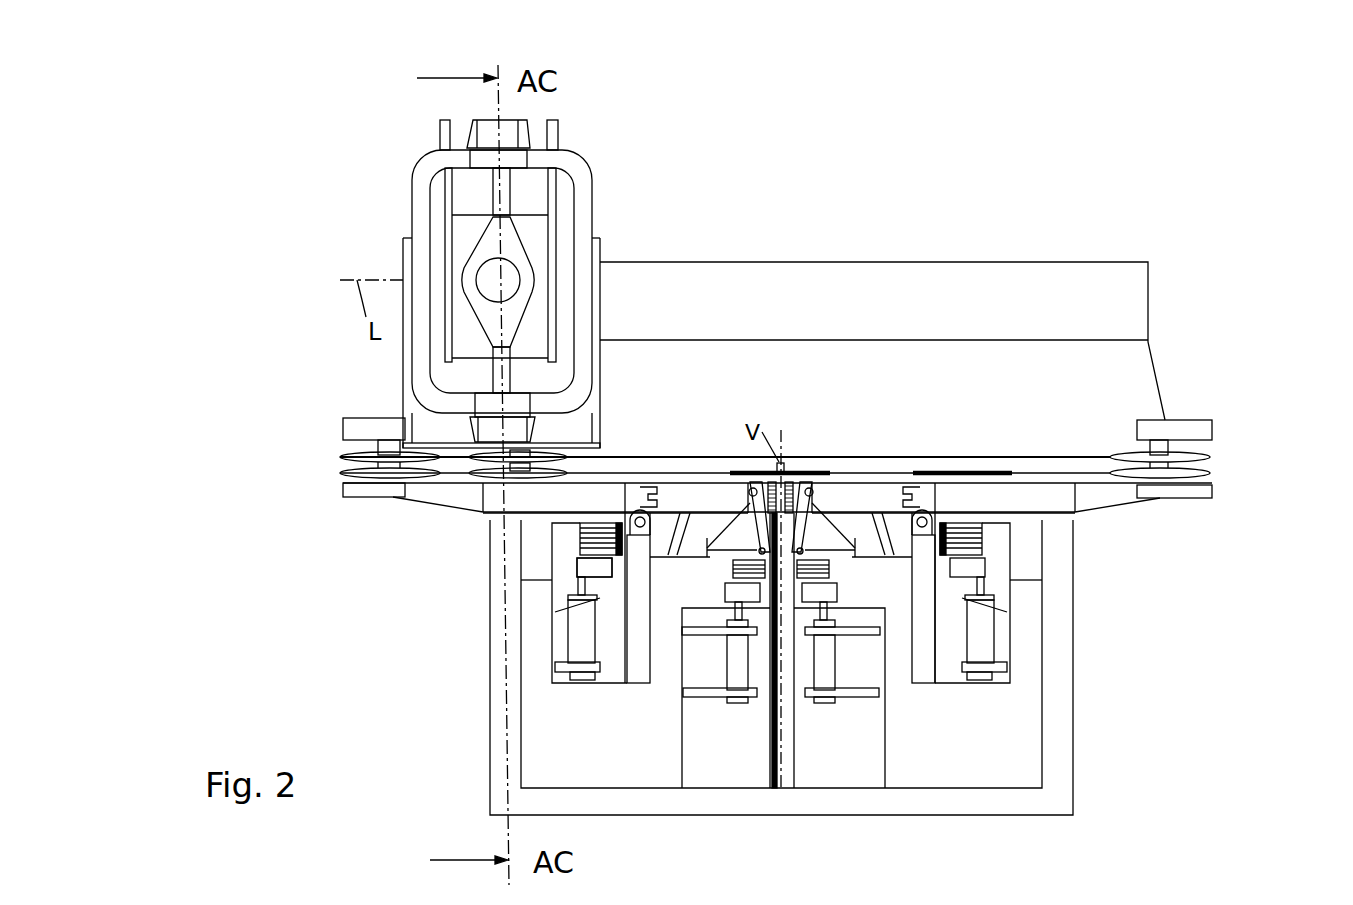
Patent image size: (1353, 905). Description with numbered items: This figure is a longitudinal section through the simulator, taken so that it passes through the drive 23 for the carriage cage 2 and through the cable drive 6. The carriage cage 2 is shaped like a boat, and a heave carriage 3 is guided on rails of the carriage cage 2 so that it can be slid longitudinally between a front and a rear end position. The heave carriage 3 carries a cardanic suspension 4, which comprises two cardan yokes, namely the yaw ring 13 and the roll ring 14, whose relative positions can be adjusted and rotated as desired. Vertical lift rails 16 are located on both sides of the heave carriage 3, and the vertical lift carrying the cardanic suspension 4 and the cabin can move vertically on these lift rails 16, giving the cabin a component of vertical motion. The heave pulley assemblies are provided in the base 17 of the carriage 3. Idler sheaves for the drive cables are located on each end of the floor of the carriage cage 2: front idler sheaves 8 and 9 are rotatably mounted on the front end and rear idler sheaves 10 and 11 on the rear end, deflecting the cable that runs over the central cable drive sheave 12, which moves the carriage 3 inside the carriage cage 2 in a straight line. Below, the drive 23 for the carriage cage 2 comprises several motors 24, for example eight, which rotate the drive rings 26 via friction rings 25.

The carriage cage 2 is at (1083, 297).
The heave carriage 3 is at (450, 387).
The cardanic suspension 4 is at (380, 224).
The cable drive 6 is at (814, 722).
The front idler sheave 8 is at (405, 448).
The front idler sheave 9 is at (340, 458).
The rear idler sheave 10 is at (1229, 449).
The rear idler sheave 11 is at (1207, 457).
The central cable drive sheave 12 is at (813, 470).
The yaw ring 13 is at (423, 188).
The roll ring 14 is at (505, 203).
The vertical lift rails 16 is at (445, 132).
The base of the carriage 17 is at (433, 445).
The drive 23 is at (598, 570).
The motors 24 is at (574, 677).
The friction rings 25 is at (612, 532).
The drive rings 26 is at (588, 562).